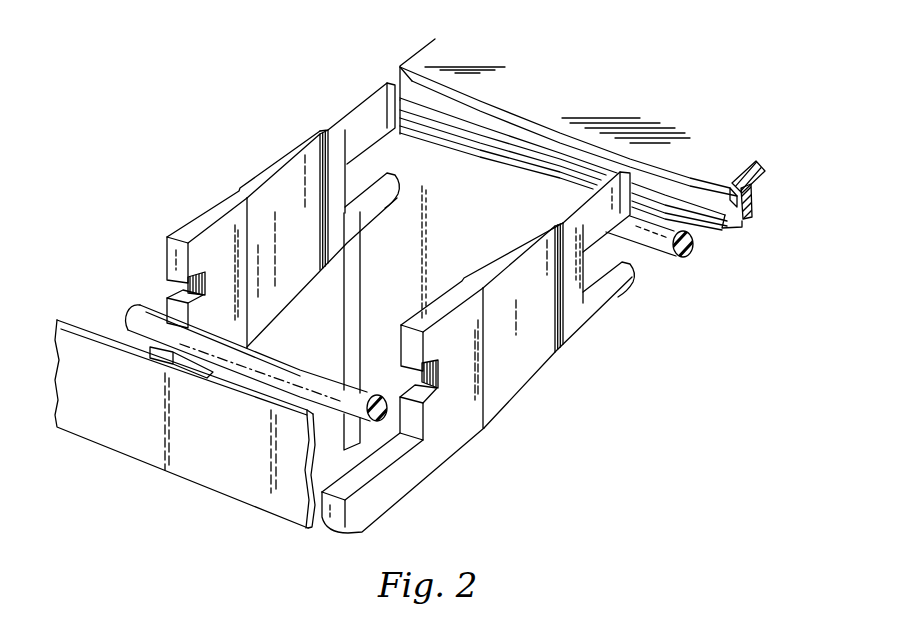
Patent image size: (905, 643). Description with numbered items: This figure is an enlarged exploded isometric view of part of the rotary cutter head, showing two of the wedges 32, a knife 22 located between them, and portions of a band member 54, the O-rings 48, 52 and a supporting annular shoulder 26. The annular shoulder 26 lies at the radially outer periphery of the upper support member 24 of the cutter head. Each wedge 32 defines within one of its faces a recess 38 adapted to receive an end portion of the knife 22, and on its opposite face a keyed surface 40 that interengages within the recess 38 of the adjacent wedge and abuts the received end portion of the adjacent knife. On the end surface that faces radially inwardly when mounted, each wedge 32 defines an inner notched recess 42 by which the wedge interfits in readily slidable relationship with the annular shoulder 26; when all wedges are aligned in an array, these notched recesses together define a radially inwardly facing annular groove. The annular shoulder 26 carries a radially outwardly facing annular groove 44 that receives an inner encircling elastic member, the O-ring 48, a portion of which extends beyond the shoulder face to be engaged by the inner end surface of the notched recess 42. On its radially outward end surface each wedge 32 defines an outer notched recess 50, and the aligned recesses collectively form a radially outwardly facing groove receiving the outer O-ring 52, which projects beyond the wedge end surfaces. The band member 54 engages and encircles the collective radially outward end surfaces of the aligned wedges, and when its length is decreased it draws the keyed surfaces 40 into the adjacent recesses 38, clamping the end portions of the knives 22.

The knife 22 is at (392, 261).
The upper support member 24 is at (397, 64).
The annular shoulder 26 is at (740, 220).
The wedge 32 is at (167, 221).
The recess 38 is at (279, 178).
The keyed surface 40 is at (489, 258).
The inner notched recess 42 is at (345, 193).
The annular groove 44 is at (727, 186).
The O-ring 48 is at (683, 257).
The outer notched recess 50 is at (167, 295).
The O-ring 52 is at (322, 376).
The band member 54 is at (186, 475).